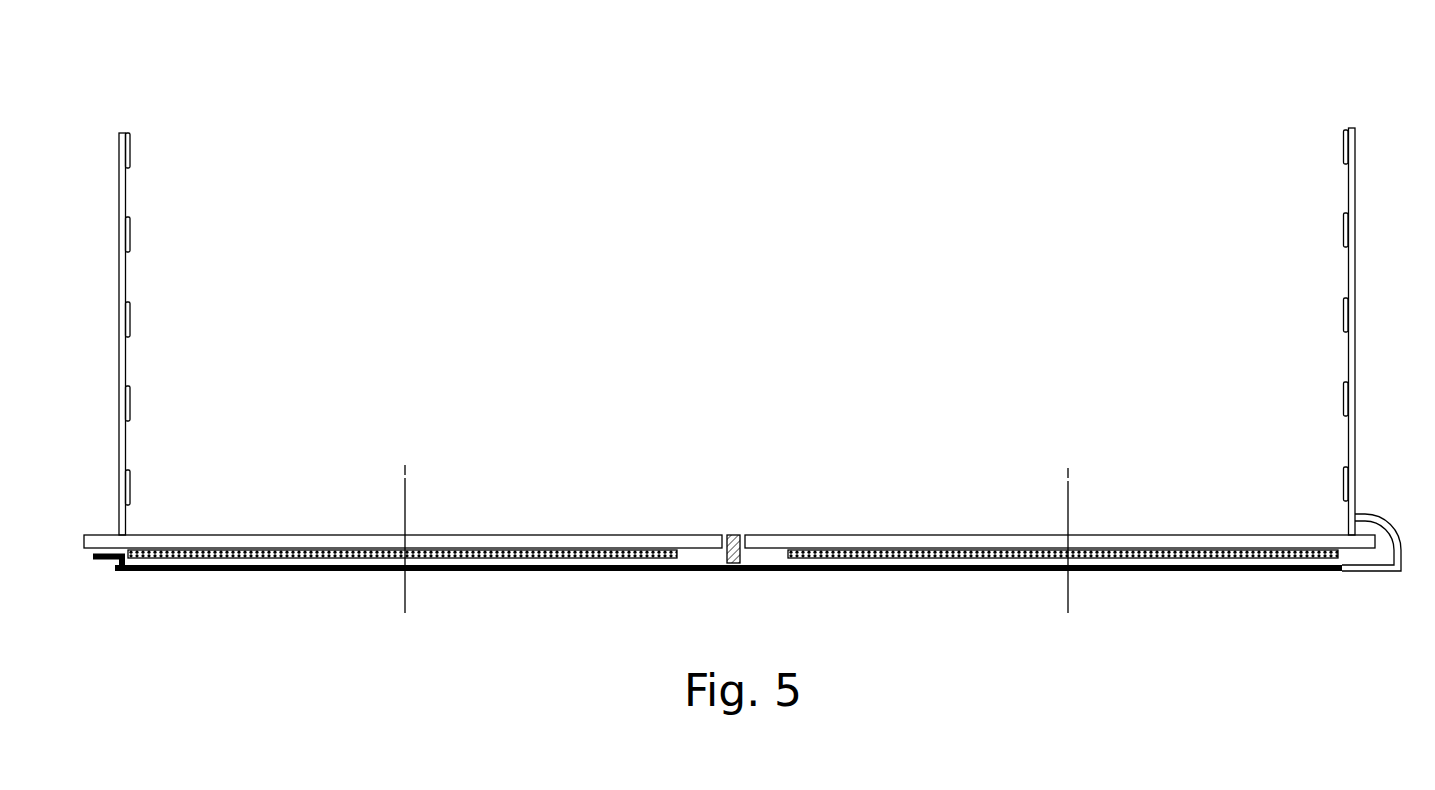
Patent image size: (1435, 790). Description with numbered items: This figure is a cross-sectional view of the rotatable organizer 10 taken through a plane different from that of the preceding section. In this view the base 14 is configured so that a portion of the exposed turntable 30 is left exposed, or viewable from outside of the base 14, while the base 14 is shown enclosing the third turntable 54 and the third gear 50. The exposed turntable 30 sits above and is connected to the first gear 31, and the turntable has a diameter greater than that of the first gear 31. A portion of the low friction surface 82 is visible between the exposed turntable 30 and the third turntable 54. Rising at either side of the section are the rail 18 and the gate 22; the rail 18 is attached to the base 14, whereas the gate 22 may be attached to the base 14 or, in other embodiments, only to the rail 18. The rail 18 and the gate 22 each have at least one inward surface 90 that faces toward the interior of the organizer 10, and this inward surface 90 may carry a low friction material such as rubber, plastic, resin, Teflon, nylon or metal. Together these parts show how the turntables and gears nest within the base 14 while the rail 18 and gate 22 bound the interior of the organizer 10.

The rotatable organizer 10 is at (1058, 157).
The base 14 is at (432, 571).
The rail 18 is at (1356, 131).
The gate 22 is at (118, 145).
The exposed turntable 30 is at (275, 542).
The first gear 31 is at (457, 552).
The third gear 50 is at (1270, 560).
The third turntable 54 is at (867, 543).
The low friction surface 82 is at (732, 533).
The inward surface 90 is at (130, 157).